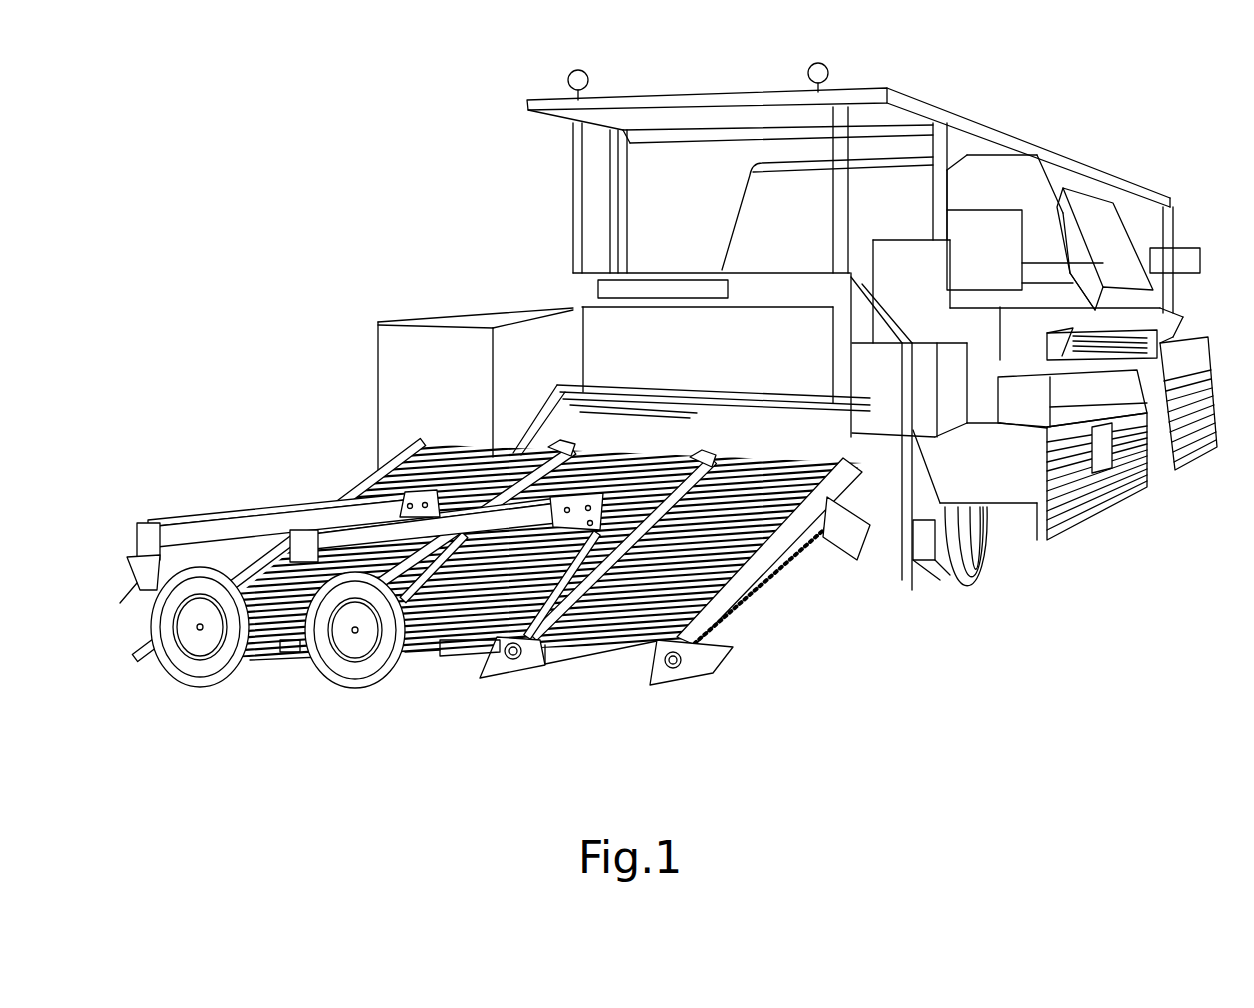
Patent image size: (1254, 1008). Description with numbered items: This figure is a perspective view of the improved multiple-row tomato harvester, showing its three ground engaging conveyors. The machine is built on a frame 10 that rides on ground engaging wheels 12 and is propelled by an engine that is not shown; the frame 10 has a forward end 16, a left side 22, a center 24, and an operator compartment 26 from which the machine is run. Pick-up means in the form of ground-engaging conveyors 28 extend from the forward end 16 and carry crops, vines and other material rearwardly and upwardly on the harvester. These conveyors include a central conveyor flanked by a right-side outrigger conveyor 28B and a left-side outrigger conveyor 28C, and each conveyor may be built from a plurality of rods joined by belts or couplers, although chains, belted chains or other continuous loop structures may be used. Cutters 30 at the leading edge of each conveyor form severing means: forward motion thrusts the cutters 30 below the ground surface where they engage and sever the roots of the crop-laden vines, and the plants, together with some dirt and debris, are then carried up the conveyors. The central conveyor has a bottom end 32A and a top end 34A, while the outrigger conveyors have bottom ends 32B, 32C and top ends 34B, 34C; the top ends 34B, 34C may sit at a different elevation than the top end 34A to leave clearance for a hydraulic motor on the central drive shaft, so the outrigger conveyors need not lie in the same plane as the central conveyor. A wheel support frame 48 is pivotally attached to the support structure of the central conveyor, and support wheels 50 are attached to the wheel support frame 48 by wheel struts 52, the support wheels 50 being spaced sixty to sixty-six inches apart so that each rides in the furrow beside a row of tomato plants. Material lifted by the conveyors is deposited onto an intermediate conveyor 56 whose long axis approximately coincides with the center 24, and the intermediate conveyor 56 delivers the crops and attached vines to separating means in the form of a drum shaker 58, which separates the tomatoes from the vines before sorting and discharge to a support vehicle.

The frame 10 is at (804, 361).
The ground engaging wheels 12 is at (980, 580).
The forward end 16 is at (700, 356).
The left side 22 is at (1090, 197).
The center 24 is at (746, 90).
The operator compartment 26 is at (652, 210).
The ground-engaging conveyors 28 is at (506, 592).
The right-side outrigger conveyor 28B is at (413, 445).
The left-side outrigger conveyor 28C is at (780, 587).
The cutters 30 is at (585, 660).
The bottom end of central conveyor 32A is at (457, 637).
The bottom end of right-side outrigger conveyor 32B is at (290, 643).
The bottom end of left-side outrigger conveyor 32C is at (628, 633).
The top end of central conveyor 34A is at (643, 463).
The top end of right-side outrigger conveyor 34B is at (513, 453).
The top end of left-side outrigger conveyor 34C is at (800, 470).
The wheel support frame 48 is at (348, 613).
The support wheels 50 is at (202, 687).
The wheel struts 52 is at (147, 580).
The intermediate conveyor 56 is at (733, 440).
The drum shaker 58 is at (1012, 176).